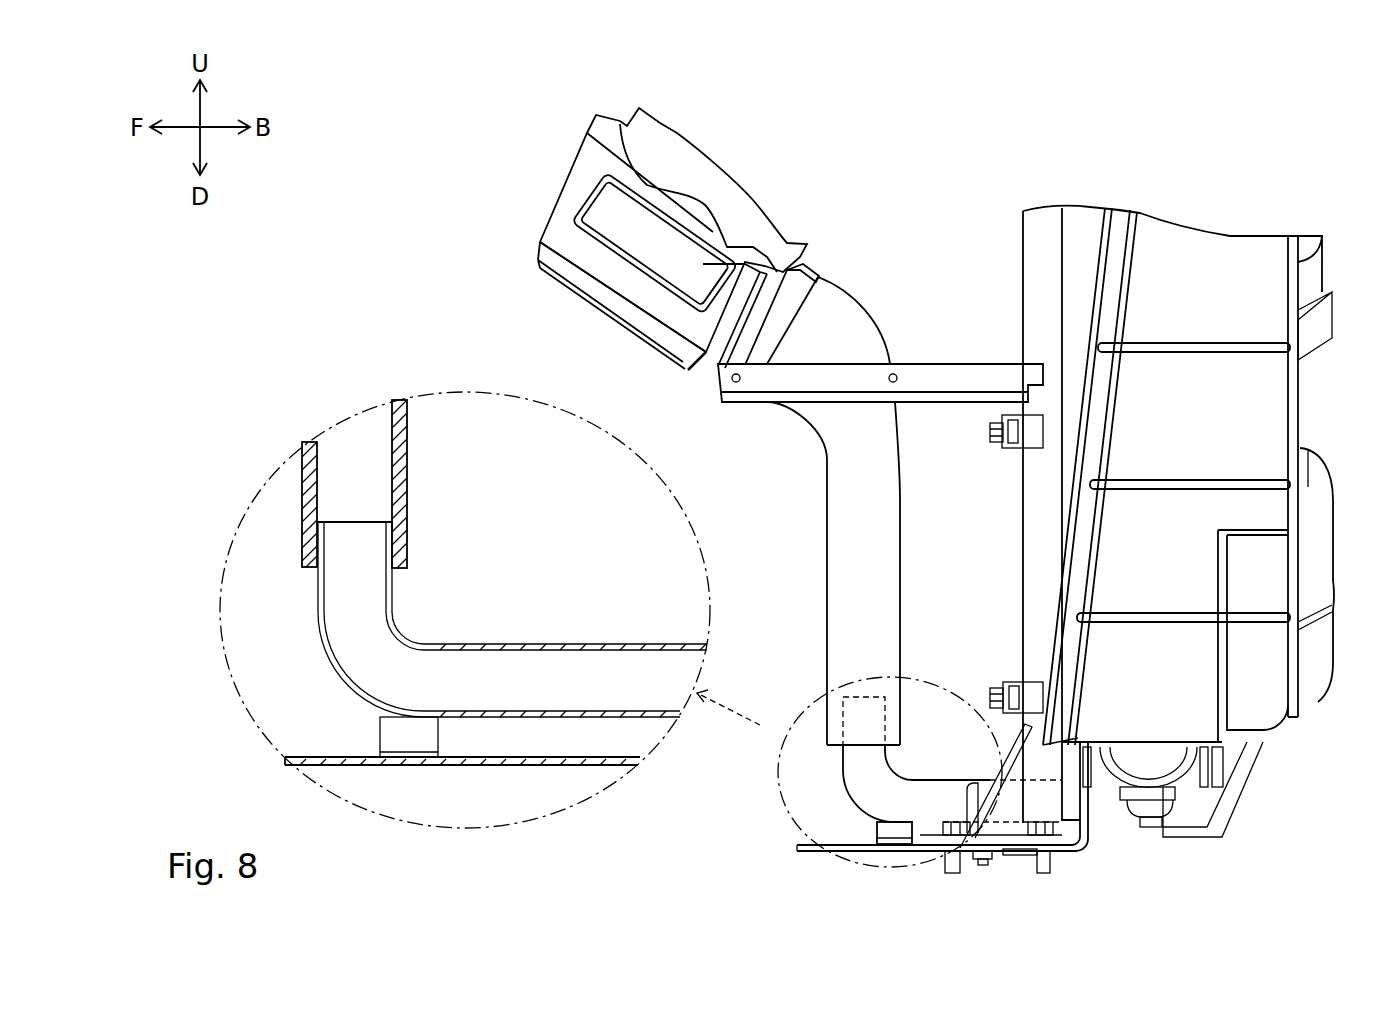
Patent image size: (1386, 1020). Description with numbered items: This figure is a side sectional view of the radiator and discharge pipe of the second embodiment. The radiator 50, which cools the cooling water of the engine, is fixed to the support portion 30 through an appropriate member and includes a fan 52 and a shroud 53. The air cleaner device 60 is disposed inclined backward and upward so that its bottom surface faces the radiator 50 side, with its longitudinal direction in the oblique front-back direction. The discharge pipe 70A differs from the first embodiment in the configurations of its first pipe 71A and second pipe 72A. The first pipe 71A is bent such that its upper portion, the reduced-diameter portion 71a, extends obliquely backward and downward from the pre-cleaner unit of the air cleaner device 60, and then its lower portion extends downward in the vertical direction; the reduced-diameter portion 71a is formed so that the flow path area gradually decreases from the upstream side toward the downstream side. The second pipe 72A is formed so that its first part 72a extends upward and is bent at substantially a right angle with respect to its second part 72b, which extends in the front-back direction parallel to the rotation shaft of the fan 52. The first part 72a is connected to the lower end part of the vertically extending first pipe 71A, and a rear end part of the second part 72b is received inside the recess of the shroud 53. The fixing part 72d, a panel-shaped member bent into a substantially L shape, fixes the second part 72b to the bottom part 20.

The bottom part 20 is at (800, 849).
The support portion 30 is at (1043, 268).
The radiator 50 is at (1272, 146).
The fan 52 is at (1313, 673).
The shroud 53 is at (1178, 262).
The air cleaner device 60 is at (545, 173).
The discharge pipe 70A is at (800, 472).
The first pipe 71A is at (840, 563).
The reduced-diameter portion 71a is at (842, 338).
The second pipe 72A is at (817, 785).
The first part 72a is at (820, 707).
The second part 72b is at (1112, 822).
The fixing part 72d is at (418, 748).